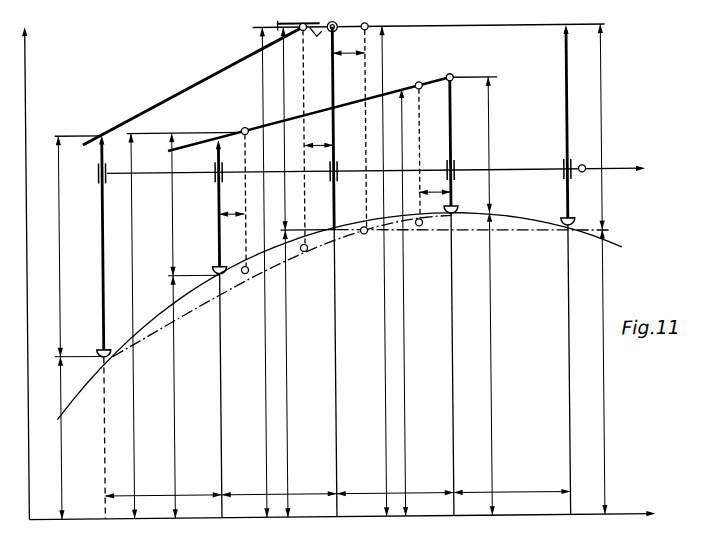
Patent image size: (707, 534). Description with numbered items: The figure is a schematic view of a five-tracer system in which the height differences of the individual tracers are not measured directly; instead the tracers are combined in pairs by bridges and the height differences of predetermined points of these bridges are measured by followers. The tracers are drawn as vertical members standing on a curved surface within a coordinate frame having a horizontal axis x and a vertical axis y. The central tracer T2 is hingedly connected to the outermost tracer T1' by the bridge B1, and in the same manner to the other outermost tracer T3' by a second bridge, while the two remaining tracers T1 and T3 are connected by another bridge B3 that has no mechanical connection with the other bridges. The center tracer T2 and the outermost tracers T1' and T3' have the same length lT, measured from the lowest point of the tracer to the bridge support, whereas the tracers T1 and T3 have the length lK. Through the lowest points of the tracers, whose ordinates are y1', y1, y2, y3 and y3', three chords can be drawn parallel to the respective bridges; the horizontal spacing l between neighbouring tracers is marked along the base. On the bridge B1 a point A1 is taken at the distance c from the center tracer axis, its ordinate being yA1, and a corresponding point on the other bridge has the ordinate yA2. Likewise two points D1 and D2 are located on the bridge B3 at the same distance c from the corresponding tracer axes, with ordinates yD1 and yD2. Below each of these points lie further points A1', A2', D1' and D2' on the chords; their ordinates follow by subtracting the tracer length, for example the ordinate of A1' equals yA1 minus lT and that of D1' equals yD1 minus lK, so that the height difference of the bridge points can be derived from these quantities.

The bridge B1 is at (193, 86).
The bridge B3 is at (308, 114).
The outermost tracer T1' is at (98, 327).
The tracer T1 is at (216, 329).
The central tracer T2 is at (343, 271).
The tracer T3 is at (458, 296).
The outermost tracer T3' is at (575, 270).
The bridge point A1 is at (298, 133).
The bridge point D1 is at (246, 190).
The bridge point D2 is at (433, 142).
The chord point D1' is at (245, 285).
The chord point A1' is at (307, 261).
The chord point A2' is at (368, 244).
The chord point D2' is at (426, 237).
The distance c is at (334, 127).
The span length l is at (337, 494).
The tracer length lT is at (330, 190).
The tracer length lK is at (330, 176).
The ordinate y1' is at (64, 438).
The ordinate yD1 is at (137, 325).
The ordinate y1 is at (175, 397).
The ordinate yA1 is at (266, 272).
The ordinate y2 is at (285, 373).
The ordinate yA2 is at (384, 271).
The ordinate yD2 is at (405, 302).
The ordinate y3 is at (489, 364).
The ordinate y3' is at (604, 372).
The x axis x is at (348, 515).
The y axis y is at (33, 273).